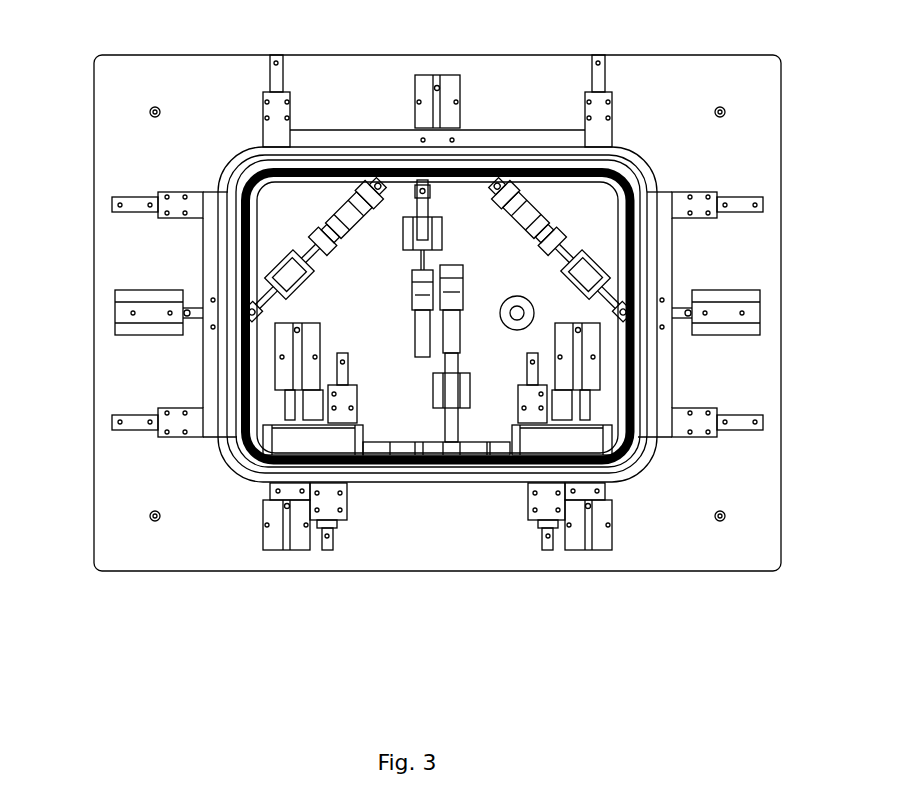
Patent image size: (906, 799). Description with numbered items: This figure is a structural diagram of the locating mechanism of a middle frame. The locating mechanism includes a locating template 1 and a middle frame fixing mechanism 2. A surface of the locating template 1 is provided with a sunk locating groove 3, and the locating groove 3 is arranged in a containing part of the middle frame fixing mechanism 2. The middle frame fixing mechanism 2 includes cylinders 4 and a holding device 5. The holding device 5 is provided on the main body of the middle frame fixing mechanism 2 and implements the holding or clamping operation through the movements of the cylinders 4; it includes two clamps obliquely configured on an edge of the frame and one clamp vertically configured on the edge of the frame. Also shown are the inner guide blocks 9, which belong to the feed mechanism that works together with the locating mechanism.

The locating template 1 is at (433, 376).
The middle frame fixing mechanism 2 is at (393, 168).
The locating groove 3 is at (249, 482).
The cylinders 4 is at (278, 265).
The holding device 5 is at (332, 215).
The inner guide blocks 9 is at (500, 487).